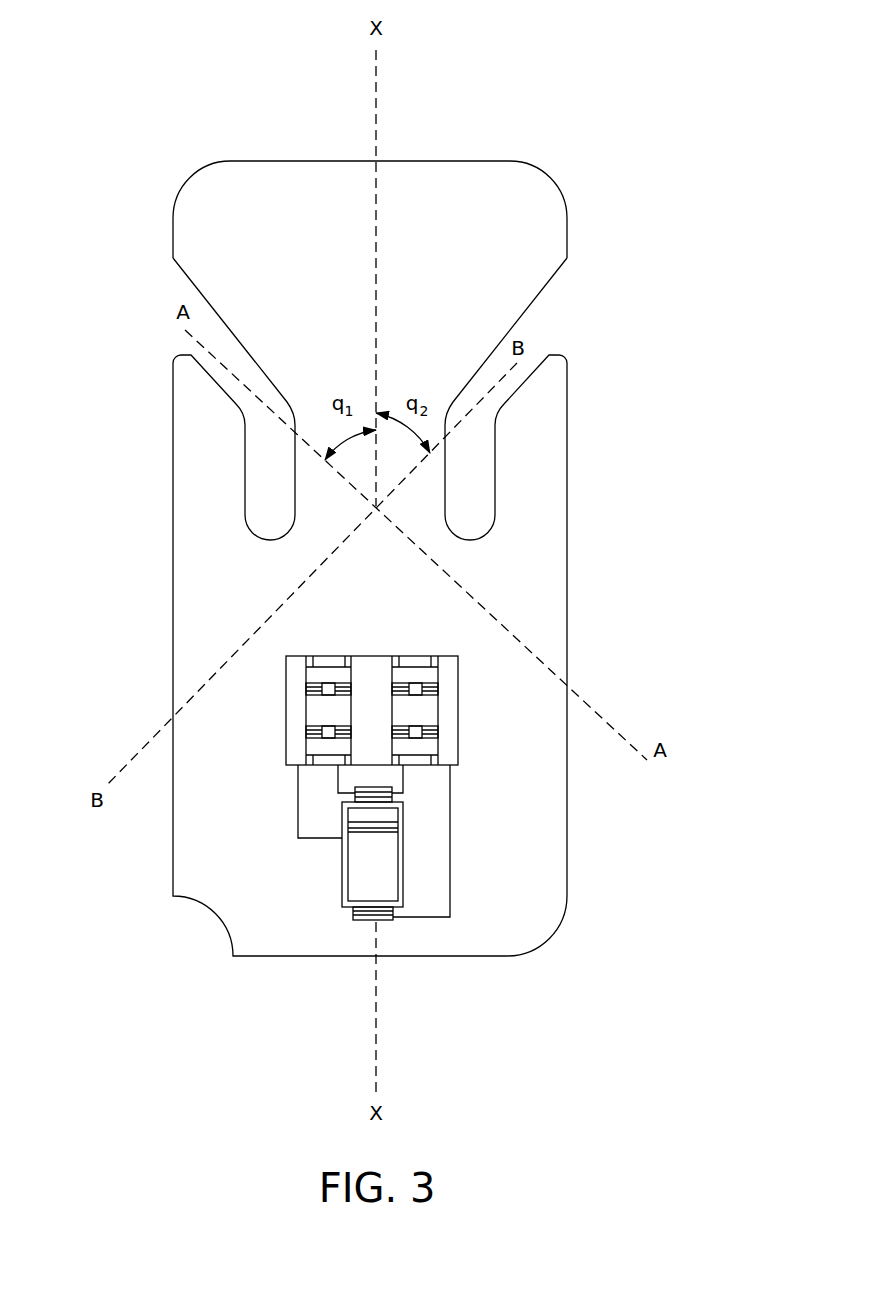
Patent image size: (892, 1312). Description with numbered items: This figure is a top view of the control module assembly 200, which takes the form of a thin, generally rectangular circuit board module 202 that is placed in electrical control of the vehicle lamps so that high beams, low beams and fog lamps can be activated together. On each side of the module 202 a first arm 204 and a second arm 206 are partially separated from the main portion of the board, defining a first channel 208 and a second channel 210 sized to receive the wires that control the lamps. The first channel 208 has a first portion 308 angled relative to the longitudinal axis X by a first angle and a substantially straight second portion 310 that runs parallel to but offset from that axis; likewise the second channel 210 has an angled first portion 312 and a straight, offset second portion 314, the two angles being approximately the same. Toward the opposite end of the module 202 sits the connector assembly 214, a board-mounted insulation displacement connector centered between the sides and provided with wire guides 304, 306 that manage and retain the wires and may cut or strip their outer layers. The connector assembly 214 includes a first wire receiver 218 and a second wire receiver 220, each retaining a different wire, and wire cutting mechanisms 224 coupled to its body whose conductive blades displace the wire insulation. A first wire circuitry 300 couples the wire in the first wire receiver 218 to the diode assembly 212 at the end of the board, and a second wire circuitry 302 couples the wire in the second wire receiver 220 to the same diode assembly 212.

The control module assembly 200 is at (553, 133).
The circuit board module 202 is at (294, 182).
The first arm 204 is at (180, 430).
The second arm 206 is at (561, 447).
The first channel 208 is at (148, 322).
The second channel 210 is at (548, 342).
The diode assembly 212 is at (360, 868).
The connector assembly 214 is at (460, 705).
The first wire receiver 218 is at (330, 648).
The second wire receiver 220 is at (413, 648).
The wire cutting mechanisms 224 is at (403, 683).
The first wire circuitry 300 is at (338, 793).
The second wire circuitry 302 is at (452, 847).
The wire guide 304 is at (306, 683).
The wire guide 306 is at (306, 728).
The first portion of first channel 308 is at (245, 340).
The second portion of first channel 310 is at (243, 485).
The first portion of second channel 312 is at (488, 347).
The second portion of second channel 314 is at (498, 482).